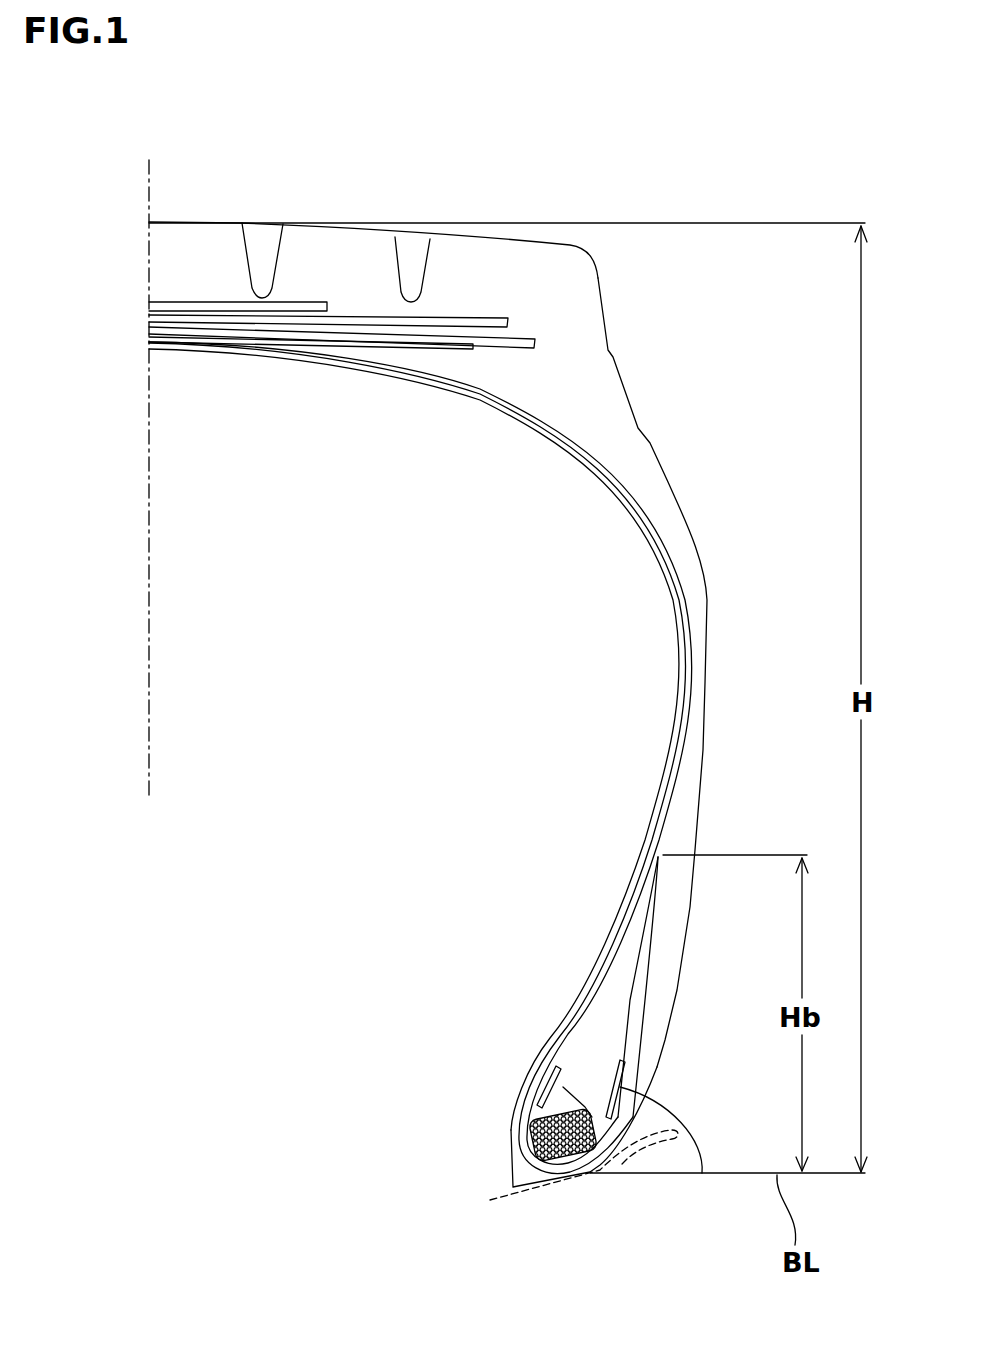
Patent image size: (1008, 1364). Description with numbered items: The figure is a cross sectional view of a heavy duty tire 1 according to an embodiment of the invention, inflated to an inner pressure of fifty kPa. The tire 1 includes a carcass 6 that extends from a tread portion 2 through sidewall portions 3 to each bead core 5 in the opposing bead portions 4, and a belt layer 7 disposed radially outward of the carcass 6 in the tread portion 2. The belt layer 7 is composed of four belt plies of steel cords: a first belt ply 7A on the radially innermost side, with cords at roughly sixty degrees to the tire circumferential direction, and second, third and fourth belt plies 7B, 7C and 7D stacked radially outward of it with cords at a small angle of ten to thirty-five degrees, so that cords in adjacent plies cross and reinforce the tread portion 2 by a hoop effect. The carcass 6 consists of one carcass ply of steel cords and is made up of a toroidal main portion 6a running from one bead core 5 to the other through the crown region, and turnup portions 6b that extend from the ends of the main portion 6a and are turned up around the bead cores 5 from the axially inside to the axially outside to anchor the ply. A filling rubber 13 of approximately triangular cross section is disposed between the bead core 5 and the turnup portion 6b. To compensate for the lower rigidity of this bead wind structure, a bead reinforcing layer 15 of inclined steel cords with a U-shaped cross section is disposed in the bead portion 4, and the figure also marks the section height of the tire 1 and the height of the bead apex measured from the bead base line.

The heavy duty tire 1 is at (645, 372).
The tread portion 2 is at (340, 252).
The sidewall portion 3 is at (724, 549).
The bead portion 4 is at (472, 1177).
The bead core 5 is at (532, 1145).
The carcass 6 is at (680, 762).
The main portion 6a is at (678, 734).
The turnup portion 6b is at (585, 1085).
The belt layer 7 is at (72, 265).
The first belt ply 7A is at (148, 338).
The second belt ply 7B is at (148, 330).
The third belt ply 7C is at (148, 320).
The fourth belt ply 7D is at (150, 305).
The filling rubber 13 is at (547, 1103).
The bead reinforcing layer 15 is at (702, 1173).